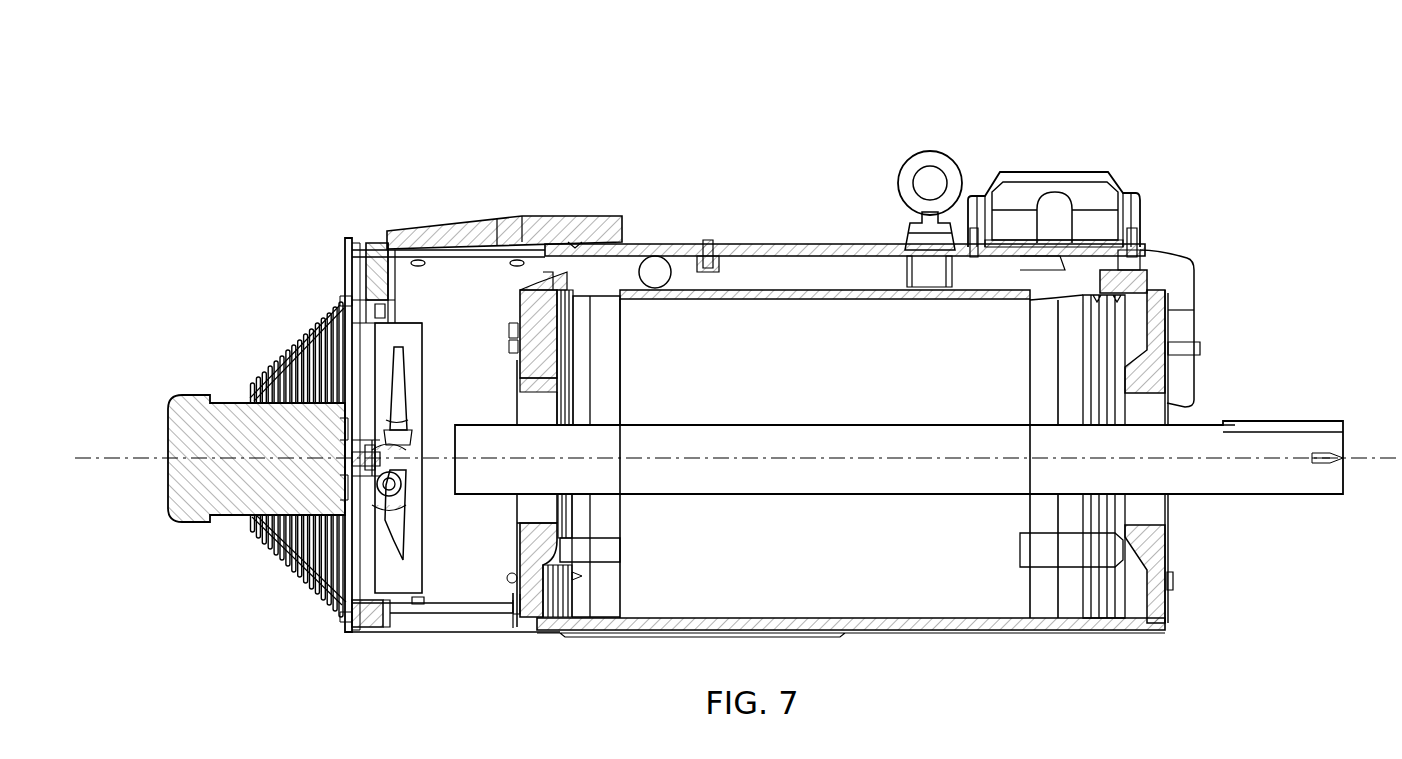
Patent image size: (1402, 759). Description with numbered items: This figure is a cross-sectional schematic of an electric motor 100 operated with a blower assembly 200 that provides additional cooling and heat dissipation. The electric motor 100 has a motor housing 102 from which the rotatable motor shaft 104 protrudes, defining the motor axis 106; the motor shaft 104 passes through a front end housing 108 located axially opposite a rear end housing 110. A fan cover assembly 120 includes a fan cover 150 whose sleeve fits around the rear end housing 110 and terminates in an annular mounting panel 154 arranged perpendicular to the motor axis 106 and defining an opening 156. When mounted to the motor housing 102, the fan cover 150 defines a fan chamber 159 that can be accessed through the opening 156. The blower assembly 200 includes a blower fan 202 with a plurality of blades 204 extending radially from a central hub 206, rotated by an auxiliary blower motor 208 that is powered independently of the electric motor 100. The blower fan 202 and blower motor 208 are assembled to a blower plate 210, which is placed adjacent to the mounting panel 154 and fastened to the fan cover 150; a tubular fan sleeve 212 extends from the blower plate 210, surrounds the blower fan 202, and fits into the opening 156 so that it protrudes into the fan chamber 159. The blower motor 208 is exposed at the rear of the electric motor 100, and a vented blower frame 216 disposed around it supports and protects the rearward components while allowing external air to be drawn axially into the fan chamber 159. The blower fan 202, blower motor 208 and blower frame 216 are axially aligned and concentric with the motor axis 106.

The electric motor 100 is at (762, 112).
The motor housing 102 is at (822, 244).
The motor shaft 104 is at (1272, 496).
The motor axis 106 is at (86, 456).
The front end housing 108 is at (1157, 340).
The rear end housing 110 is at (522, 306).
The fan cover assembly 120 is at (630, 163).
The fan cover 150 is at (472, 227).
The mounting panel 154 is at (378, 250).
The opening 156 is at (372, 302).
The fan chamber 159 is at (488, 556).
The blower assembly 200 is at (216, 296).
The blower fan 202 is at (390, 432).
The blades 204 is at (400, 370).
The central hub 206 is at (400, 487).
The blower motor 208 is at (190, 527).
The blower plate 210 is at (345, 284).
The fan sleeve 212 is at (428, 603).
The blower frame 216 is at (304, 588).